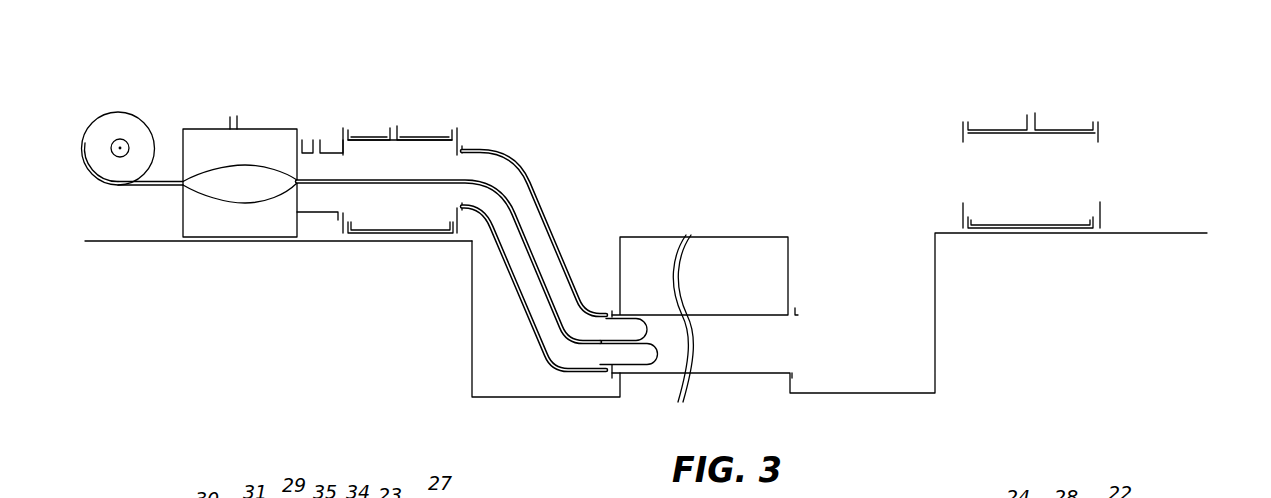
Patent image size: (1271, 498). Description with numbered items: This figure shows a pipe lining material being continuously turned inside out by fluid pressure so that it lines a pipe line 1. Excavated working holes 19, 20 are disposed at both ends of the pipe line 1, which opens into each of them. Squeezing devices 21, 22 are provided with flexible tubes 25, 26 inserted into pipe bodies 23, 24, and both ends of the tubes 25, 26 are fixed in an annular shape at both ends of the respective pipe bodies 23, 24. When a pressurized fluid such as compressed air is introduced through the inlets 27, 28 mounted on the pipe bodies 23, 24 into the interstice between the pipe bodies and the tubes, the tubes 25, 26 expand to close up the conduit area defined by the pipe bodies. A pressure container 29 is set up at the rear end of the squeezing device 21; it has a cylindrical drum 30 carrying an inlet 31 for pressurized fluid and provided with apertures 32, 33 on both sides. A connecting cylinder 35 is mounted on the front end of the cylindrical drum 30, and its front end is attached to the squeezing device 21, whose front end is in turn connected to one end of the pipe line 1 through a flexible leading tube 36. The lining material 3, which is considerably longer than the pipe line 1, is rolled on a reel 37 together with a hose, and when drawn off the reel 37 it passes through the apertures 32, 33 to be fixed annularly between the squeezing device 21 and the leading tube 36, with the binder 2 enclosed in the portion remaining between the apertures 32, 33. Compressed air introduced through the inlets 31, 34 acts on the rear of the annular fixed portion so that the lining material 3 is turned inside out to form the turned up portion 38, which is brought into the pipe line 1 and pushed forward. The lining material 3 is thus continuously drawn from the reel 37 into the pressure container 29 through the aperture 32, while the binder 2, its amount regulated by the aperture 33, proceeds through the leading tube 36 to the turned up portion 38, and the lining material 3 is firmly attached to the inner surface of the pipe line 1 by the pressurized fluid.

The pipe line 1 is at (725, 313).
The binder 2 is at (240, 183).
The lining material 3 is at (247, 165).
The excavated working hole 19 is at (473, 357).
The excavated working hole 20 is at (789, 272).
The squeezing device 21 is at (412, 117).
The squeezing device 22 is at (1046, 117).
The pipe body 23 is at (368, 137).
The pipe body 24 is at (982, 128).
The flexible tube 25 is at (378, 140).
The flexible tube 26 is at (1017, 135).
The inlet for introducing a pressurized fluid 27 is at (402, 133).
The inlet for introducing a pressurized fluid 28 is at (1037, 122).
The pressure container 29 is at (274, 142).
The cylindrical drum 30 is at (195, 128).
The inlet for introducing a pressurized fluid 31 is at (237, 120).
The aperture 32 is at (182, 188).
The aperture 33 is at (300, 192).
The inlet 34 is at (323, 143).
The connecting cylinder 35 is at (305, 140).
The leading tube 36 is at (560, 243).
The reel 37 is at (121, 146).
The turned up portion 38 is at (638, 327).